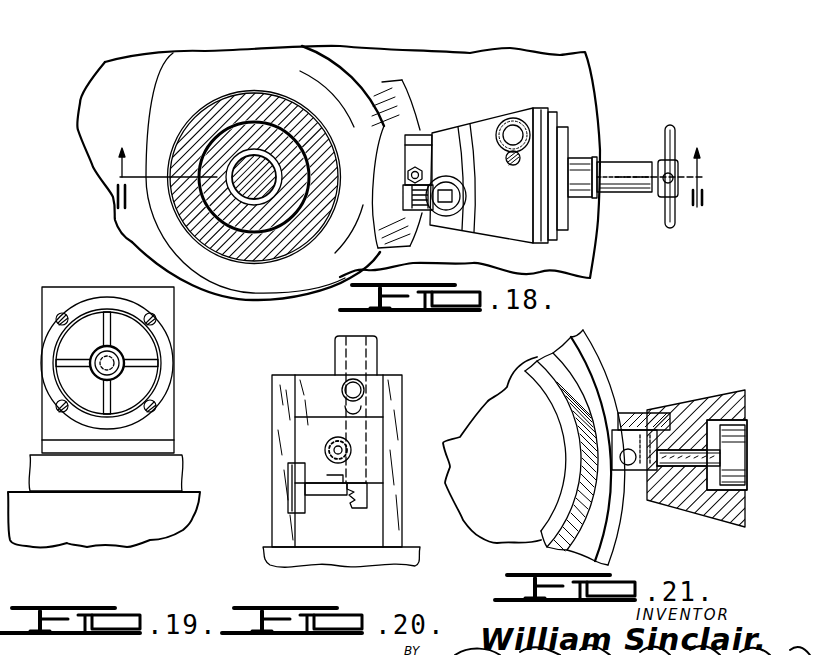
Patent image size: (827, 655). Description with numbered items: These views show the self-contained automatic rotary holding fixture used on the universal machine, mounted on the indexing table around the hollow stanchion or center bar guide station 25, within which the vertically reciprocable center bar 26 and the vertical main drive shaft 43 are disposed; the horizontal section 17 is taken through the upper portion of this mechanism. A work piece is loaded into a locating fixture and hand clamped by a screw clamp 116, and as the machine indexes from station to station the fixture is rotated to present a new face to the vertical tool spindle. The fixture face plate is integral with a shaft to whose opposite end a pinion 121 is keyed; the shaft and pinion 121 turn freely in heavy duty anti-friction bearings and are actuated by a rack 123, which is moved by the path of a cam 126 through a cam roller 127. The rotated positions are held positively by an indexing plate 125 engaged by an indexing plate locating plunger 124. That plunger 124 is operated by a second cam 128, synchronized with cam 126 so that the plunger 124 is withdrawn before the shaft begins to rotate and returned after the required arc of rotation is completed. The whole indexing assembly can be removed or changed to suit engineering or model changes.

In FIG. 18, the section line 17- 17 is at (120, 177).
In FIG. 18, the center bar guide station 25 is at (213, 107).
In FIG. 18, the center bar 26 is at (220, 140).
In FIG. 18, the vertical main drive shaft 43 is at (232, 189).
In FIG. 18, the screw clamp 116 is at (598, 172).
In FIG. 19, the screw clamp 116 is at (125, 357).
In FIG. 20, the pinion 121 is at (325, 452).
In FIG. 20, the rack 123 is at (357, 510).
In FIG. 21, the indexing plate locating plunger 124 is at (675, 450).
In FIG. 21, the indexing plate 125 is at (719, 450).
In FIG. 18, the cam 126 is at (407, 100).
In FIG. 18, the cam roller 127 is at (438, 188).
In FIG. 20, the cam roller 127 is at (364, 393).
In FIG. 21, the cam 128 is at (614, 366).